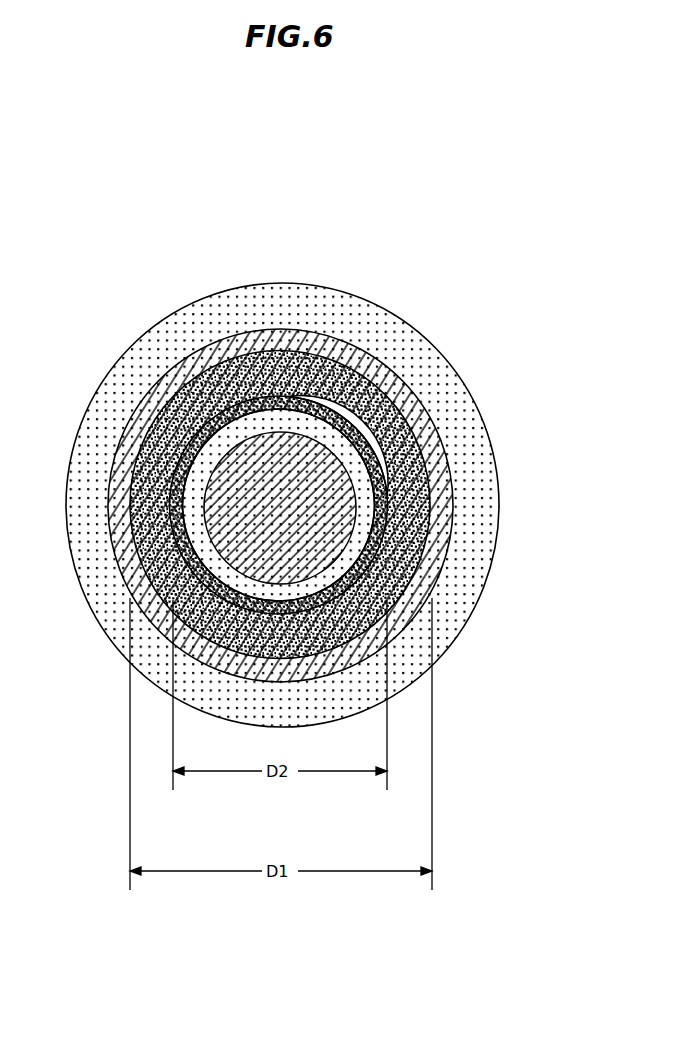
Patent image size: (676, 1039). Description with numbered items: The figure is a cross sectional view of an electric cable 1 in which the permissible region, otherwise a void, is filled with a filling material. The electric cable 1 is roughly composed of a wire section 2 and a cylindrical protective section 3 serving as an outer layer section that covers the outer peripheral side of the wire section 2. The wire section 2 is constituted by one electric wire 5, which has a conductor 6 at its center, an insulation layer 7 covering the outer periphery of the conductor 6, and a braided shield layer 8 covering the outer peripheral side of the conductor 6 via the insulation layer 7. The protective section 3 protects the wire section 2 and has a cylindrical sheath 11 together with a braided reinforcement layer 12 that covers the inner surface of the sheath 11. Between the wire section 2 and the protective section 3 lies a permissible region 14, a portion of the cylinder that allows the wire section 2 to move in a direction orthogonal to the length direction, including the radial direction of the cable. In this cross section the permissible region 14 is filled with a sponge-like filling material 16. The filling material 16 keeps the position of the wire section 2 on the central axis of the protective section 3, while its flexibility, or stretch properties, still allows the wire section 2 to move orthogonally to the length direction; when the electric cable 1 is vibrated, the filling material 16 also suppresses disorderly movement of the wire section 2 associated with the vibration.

The electric cable 1 is at (326, 468).
The wire section 2 is at (358, 406).
The protective section 3 is at (280, 468).
The electric wire 5 is at (380, 495).
The conductor 6 is at (350, 462).
The insulation layer 7 is at (375, 478).
The braided shield layer 8 is at (352, 490).
The sheath 11 is at (147, 350).
The braided reinforcement layer 12 is at (212, 347).
The permissible region 14 is at (338, 445).
The filling material 16 is at (340, 367).